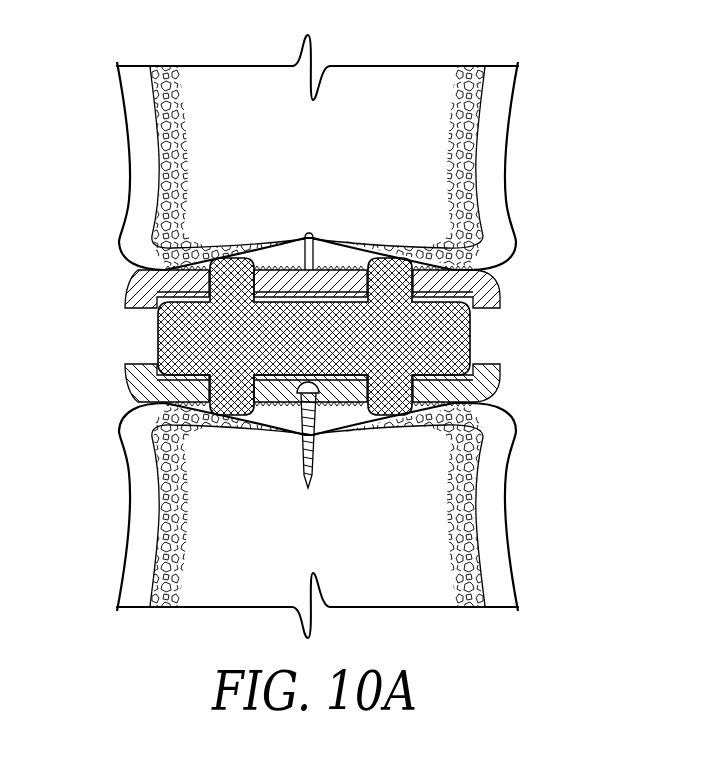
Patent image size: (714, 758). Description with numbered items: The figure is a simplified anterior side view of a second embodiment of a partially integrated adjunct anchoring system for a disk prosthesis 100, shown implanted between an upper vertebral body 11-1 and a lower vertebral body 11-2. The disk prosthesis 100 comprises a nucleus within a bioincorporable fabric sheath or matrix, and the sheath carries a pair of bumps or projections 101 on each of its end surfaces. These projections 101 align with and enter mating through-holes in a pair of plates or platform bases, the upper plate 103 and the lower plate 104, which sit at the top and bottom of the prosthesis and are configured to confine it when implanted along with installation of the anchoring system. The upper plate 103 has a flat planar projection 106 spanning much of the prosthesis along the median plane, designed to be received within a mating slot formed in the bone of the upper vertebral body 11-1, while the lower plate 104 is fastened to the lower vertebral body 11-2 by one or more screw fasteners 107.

The upper vertebral body 11-1 is at (430, 80).
The lower vertebral body 11-2 is at (405, 597).
The disk prosthesis 100 is at (309, 341).
The projections 101 is at (233, 257).
The upper plate 103 is at (138, 276).
The lower plate 104 is at (136, 398).
The flat planar projection 106 is at (316, 232).
The screw fastener 107 is at (316, 480).